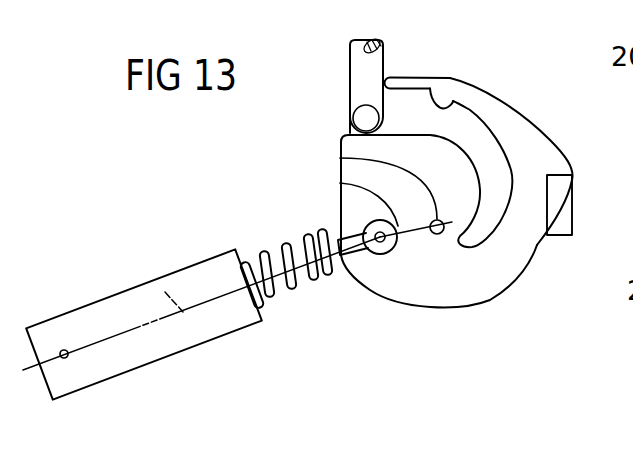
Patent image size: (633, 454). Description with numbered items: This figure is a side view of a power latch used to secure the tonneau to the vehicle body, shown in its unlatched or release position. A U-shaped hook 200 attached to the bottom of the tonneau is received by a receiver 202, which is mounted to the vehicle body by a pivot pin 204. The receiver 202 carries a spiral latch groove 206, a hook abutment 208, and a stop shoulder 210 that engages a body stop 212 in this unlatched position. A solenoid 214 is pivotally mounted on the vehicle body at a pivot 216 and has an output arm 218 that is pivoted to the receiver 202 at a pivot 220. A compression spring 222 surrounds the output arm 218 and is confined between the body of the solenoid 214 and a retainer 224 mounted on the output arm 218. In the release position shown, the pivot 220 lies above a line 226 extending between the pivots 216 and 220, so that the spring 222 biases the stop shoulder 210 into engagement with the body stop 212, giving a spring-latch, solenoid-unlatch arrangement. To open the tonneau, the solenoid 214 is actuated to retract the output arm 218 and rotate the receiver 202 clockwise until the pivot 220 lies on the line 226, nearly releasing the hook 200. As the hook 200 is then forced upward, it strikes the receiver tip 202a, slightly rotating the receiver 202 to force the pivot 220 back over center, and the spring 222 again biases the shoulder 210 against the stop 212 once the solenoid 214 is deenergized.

The U-shaped hook 200 is at (353, 70).
The receiver 202 is at (500, 263).
The receiver tip 202a is at (390, 77).
The pivot pin 204 is at (340, 158).
The spiral latch groove 206 is at (450, 107).
The hook abutment 208 is at (350, 138).
The stop shoulder 210 is at (566, 180).
The body stop 212 is at (560, 215).
The solenoid 214 is at (147, 353).
The solenoid pivot 216 is at (70, 360).
The output arm 218 is at (348, 241).
The pivot 220 is at (340, 183).
The compression spring 222 is at (290, 297).
The retainer 224 is at (343, 280).
The line 226 is at (162, 290).